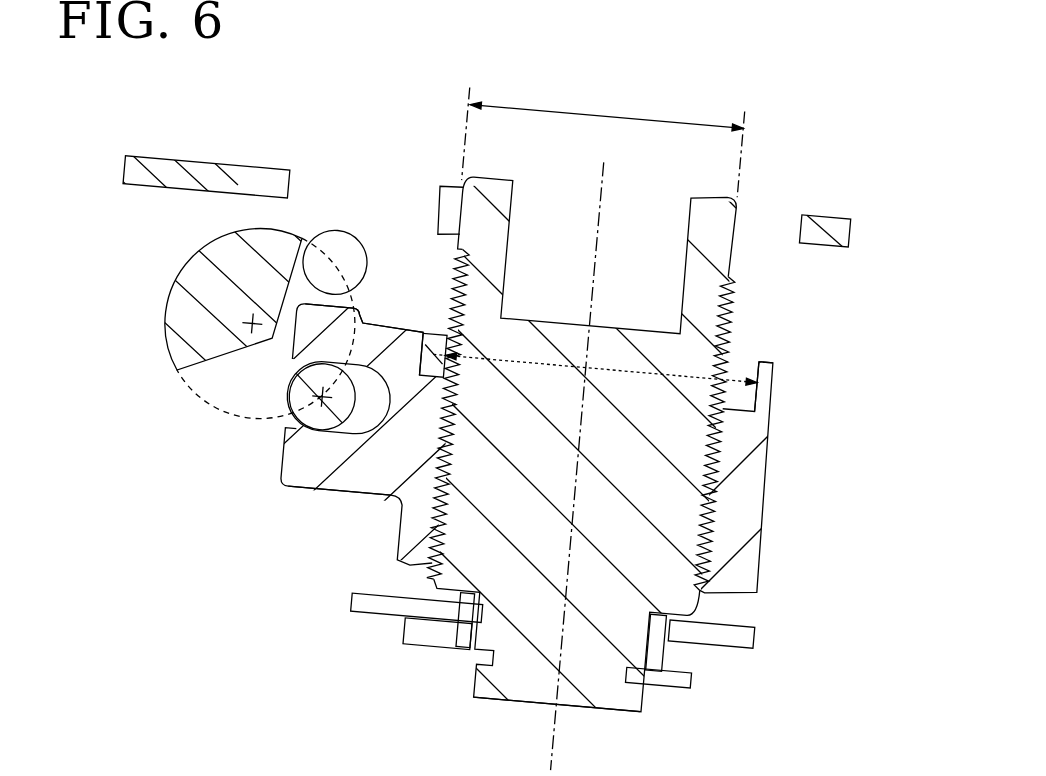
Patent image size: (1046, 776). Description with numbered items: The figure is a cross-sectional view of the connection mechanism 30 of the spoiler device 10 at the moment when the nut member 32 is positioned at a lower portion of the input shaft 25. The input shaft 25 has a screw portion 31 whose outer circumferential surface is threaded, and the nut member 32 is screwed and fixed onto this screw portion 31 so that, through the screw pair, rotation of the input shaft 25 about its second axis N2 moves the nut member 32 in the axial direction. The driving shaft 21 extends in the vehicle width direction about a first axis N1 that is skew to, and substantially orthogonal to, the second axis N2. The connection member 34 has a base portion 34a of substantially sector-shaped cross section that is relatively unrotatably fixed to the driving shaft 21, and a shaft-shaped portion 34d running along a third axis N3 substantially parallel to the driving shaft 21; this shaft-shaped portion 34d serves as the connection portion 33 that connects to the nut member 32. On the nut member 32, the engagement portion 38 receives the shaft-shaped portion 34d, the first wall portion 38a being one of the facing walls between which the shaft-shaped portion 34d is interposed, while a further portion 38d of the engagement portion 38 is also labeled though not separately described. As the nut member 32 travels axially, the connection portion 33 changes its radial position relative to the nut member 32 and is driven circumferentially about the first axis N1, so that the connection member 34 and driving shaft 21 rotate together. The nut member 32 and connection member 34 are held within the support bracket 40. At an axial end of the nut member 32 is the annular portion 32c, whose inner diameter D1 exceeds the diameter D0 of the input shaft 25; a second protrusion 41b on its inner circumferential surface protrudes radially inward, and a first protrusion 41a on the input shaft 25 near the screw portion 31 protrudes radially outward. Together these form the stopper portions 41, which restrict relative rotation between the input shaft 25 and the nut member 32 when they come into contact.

The connection mechanism 30 is at (523, 388).
The spoiler device 10 is at (523, 388).
The support bracket 40 is at (225, 160).
The stopper portions 41 is at (376, 256).
The first protrusion 41a is at (443, 185).
The second protrusion 41b is at (437, 333).
The connection member 34 is at (204, 253).
The base portion 34a is at (204, 253).
The shaft-shaped portion 34d is at (278, 423).
The driving shaft 21 is at (168, 299).
The first axis N1 is at (157, 297).
The second axis N2 is at (577, 466).
The third axis N3 is at (300, 387).
The engagement portion 38 is at (383, 418).
The first wall portion 38a is at (340, 304).
The nut lower surface 38d is at (310, 486).
The connection portion 33 is at (262, 415).
The screw portion 31 is at (735, 317).
The nut member 32 is at (743, 480).
The annular portion 32c is at (775, 370).
The input shaft 25 is at (592, 704).
The diameter of the input shaft D0 is at (603, 145).
The inner diameter of the annular portion D1 is at (595, 368).